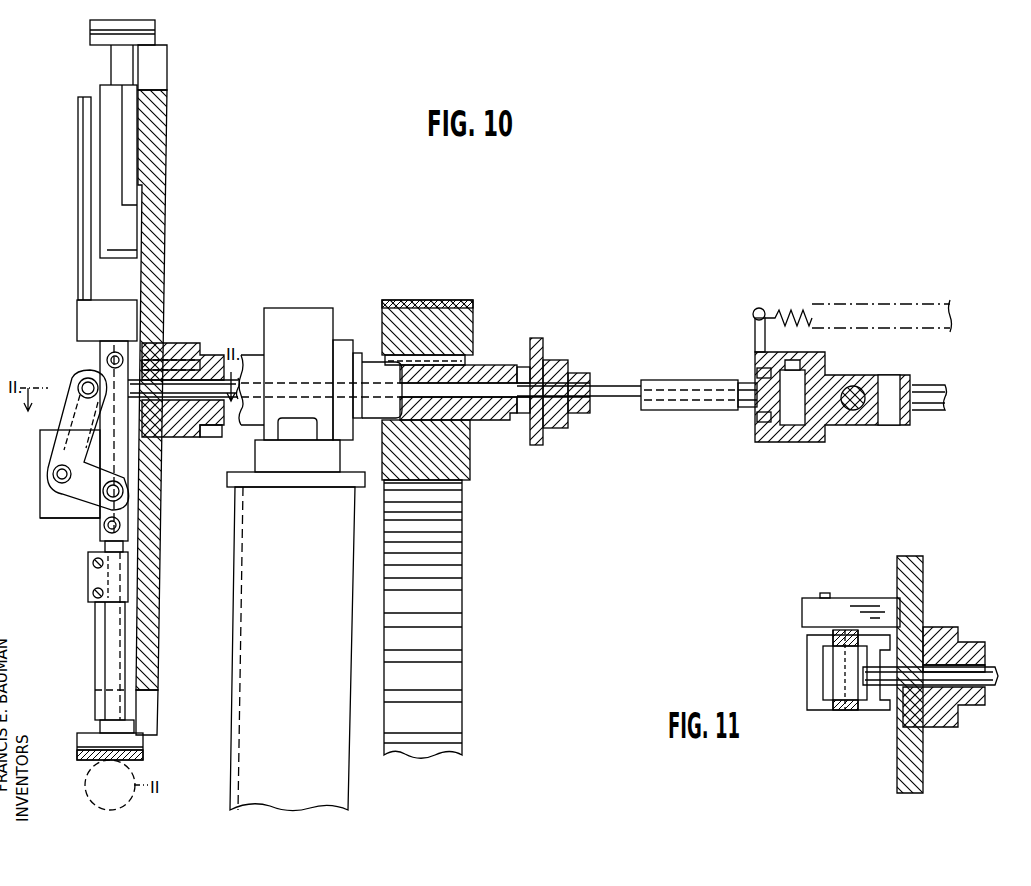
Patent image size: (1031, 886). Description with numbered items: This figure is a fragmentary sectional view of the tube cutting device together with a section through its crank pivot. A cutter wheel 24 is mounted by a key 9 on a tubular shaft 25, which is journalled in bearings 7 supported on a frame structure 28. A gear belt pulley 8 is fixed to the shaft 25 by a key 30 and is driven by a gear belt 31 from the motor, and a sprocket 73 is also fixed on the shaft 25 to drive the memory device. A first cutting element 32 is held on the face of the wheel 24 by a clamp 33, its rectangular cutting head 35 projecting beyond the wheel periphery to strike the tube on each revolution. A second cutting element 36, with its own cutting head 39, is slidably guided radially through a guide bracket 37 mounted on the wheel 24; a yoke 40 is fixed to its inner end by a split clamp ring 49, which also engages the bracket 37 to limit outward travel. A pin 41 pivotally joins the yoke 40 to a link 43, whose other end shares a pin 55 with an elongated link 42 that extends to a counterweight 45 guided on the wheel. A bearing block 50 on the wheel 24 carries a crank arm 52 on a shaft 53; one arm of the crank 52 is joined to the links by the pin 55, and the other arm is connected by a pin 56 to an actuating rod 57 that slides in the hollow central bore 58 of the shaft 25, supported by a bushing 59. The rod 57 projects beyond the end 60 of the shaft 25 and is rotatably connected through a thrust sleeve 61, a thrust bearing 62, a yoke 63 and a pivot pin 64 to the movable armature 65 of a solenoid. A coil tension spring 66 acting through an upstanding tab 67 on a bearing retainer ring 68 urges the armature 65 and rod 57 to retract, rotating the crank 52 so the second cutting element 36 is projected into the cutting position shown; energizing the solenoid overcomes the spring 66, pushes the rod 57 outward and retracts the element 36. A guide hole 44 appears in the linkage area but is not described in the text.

In FIG. 10, the bearings 7 is at (300, 314).
In FIG. 10, the gear belt pulley 8 is at (465, 318).
In FIG. 10, the key 9 is at (184, 367).
In FIG. 10, the cutter wheel 24 is at (158, 155).
In FIG. 11, the cutter wheel 24 is at (920, 590).
In FIG. 10, the tubular shaft 25 is at (212, 355).
In FIG. 11, the tubular shaft 25 is at (980, 700).
In FIG. 10, the frame structure 28 is at (245, 544).
In FIG. 10, the key 30 is at (468, 358).
In FIG. 10, the gear belt 31 is at (440, 300).
In FIG. 10, the first cutting element 32 is at (115, 66).
In FIG. 10, the clamp 33 is at (106, 156).
In FIG. 10, the cutting head 35 is at (155, 25).
In FIG. 10, the second cutting element 36 is at (100, 726).
In FIG. 10, the guide bracket 37 is at (96, 638).
In FIG. 10, the cutting head 39 is at (143, 752).
In FIG. 10, the yoke 40 is at (104, 548).
In FIG. 10, the pin 41 is at (104, 527).
In FIG. 10, the elongated link 42 is at (116, 457).
In FIG. 10, the link 43 is at (75, 512).
In FIG. 10, the pivot hole 44 is at (106, 360).
In FIG. 10, the counterweight 45 is at (77, 318).
In FIG. 10, the split clamp ring 49 is at (92, 580).
In FIG. 10, the bearing block 50 is at (42, 456).
In FIG. 11, the bearing block 50 is at (805, 606).
In FIG. 10, the crank arm 52 is at (62, 440).
In FIG. 11, the crank arm 52 is at (810, 656).
In FIG. 10, the shaft 53 is at (54, 478).
In FIG. 11, the shaft 53 is at (828, 592).
In FIG. 10, the pin 55 is at (125, 492).
In FIG. 10, the pin 56 is at (84, 386).
In FIG. 10, the actuating rod 57 is at (160, 378).
In FIG. 11, the actuating rod 57 is at (990, 684).
In FIG. 10, the hollow central bore 58 is at (222, 428).
In FIG. 11, the hollow central bore 58 is at (985, 670).
In FIG. 10, the bushing 59 is at (582, 373).
In FIG. 10, the end of shaft 60 is at (592, 415).
In FIG. 10, the thrust sleeve 61 is at (668, 382).
In FIG. 10, the thrust bearing 62 is at (748, 386).
In FIG. 10, the yoke 63 is at (812, 358).
In FIG. 10, the pivot pin 64 is at (858, 390).
In FIG. 10, the movable armature 65 is at (930, 385).
In FIG. 10, the coil tension spring 66 is at (810, 305).
In FIG. 10, the upstanding tab 67 is at (755, 335).
In FIG. 10, the bearing retainer ring 68 is at (758, 372).
In FIG. 10, the sprocket 73 is at (540, 445).